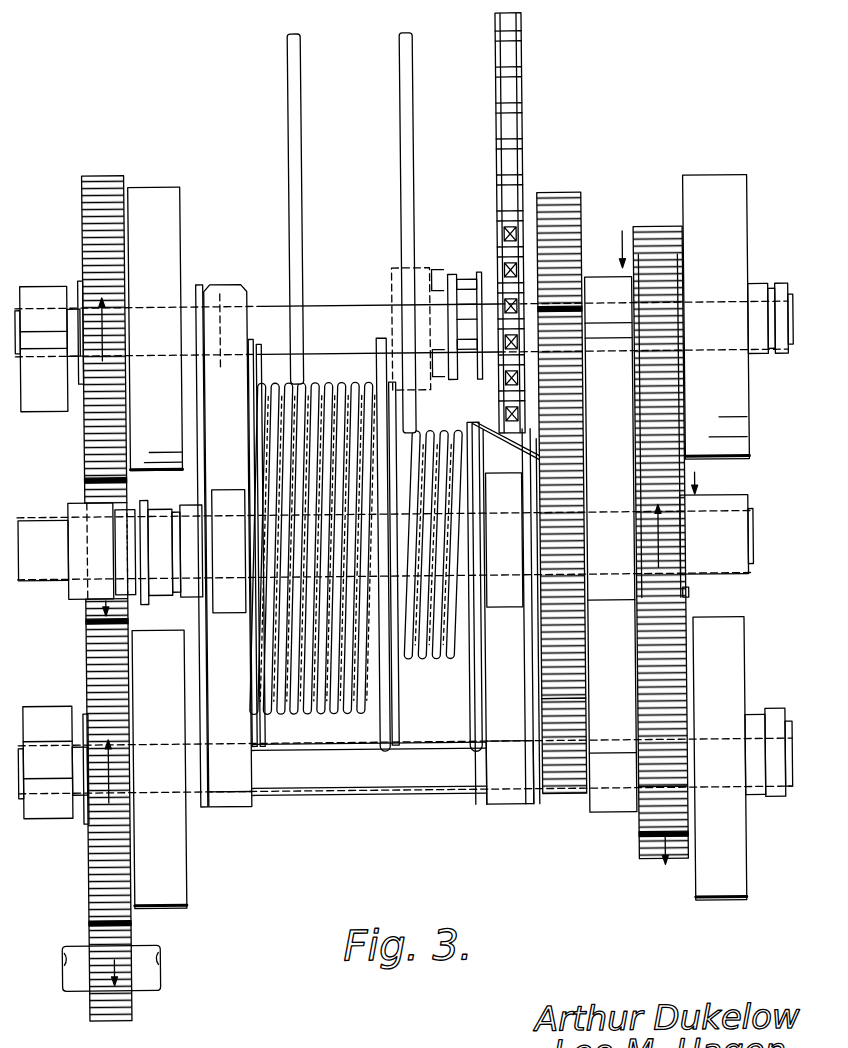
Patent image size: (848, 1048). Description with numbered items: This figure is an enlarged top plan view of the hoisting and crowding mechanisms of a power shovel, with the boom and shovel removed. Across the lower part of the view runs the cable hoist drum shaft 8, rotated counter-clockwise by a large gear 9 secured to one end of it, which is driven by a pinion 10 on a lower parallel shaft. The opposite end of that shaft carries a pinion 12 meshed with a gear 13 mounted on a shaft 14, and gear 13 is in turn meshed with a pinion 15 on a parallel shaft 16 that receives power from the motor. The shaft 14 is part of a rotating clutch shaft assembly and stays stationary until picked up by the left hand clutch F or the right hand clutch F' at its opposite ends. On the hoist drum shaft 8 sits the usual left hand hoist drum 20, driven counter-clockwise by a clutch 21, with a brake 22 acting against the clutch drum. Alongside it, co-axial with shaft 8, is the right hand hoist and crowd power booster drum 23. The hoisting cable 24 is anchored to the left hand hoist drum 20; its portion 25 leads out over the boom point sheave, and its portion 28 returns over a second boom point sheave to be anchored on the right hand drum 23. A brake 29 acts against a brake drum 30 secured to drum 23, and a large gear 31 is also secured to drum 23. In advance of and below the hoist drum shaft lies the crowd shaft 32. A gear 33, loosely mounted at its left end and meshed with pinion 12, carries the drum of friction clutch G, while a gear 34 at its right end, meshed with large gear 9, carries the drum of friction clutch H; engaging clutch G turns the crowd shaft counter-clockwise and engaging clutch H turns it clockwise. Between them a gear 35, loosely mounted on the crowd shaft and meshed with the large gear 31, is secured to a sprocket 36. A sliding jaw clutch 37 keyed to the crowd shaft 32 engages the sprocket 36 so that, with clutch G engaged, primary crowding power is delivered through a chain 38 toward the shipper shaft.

The hoist drum shaft 8 is at (50, 567).
The large gear 9 is at (658, 810).
The pinion 10 is at (689, 594).
The pinion 12 is at (94, 498).
The gear 13 is at (100, 668).
The shaft 14 is at (271, 796).
The pinion 15 is at (121, 1012).
The shaft 16 is at (81, 985).
The hoist drum 20 is at (295, 702).
The clutch 21 is at (203, 672).
The brake 22 is at (230, 601).
The hoist and crowd power booster drum 23 is at (407, 657).
The hoisting cable 24 is at (399, 58).
The portion of the hoist cable 25 is at (292, 137).
The portion of the cable 28 is at (404, 135).
The brake 29 is at (507, 594).
The brake drum 30 is at (502, 795).
The large gear 31 is at (575, 773).
The crowd shaft 32 is at (333, 318).
The gear 33 is at (93, 181).
The gear 34 is at (650, 233).
The gear 35 is at (558, 206).
The sprocket 36 is at (500, 252).
The sliding jaw clutch 37 is at (470, 273).
The chain 38 is at (524, 113).
The clutch F is at (177, 769).
The clutch F' is at (743, 758).
The friction clutch G is at (148, 190).
The friction clutch H is at (713, 187).